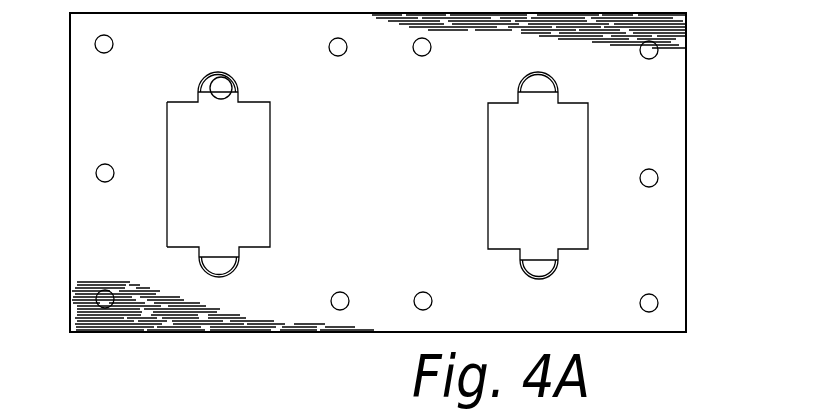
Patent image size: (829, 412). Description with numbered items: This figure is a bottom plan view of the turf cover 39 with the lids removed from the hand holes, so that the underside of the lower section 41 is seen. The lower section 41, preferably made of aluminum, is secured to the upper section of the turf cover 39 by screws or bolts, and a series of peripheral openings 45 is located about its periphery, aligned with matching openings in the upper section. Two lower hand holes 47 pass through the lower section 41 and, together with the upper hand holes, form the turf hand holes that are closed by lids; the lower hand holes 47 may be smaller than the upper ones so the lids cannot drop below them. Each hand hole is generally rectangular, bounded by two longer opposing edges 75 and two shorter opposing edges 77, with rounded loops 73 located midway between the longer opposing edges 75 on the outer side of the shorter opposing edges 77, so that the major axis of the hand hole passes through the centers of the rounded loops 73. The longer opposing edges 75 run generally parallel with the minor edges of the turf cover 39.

The turf cover 39 is at (687, 215).
The lower section 41 is at (648, 108).
The peripheral openings 45 is at (343, 54).
The lower hand holes 47 is at (237, 169).
The rounded loops 73 is at (225, 93).
The longer opposing edges 75 is at (162, 130).
The shorter opposing edges 77 is at (255, 249).